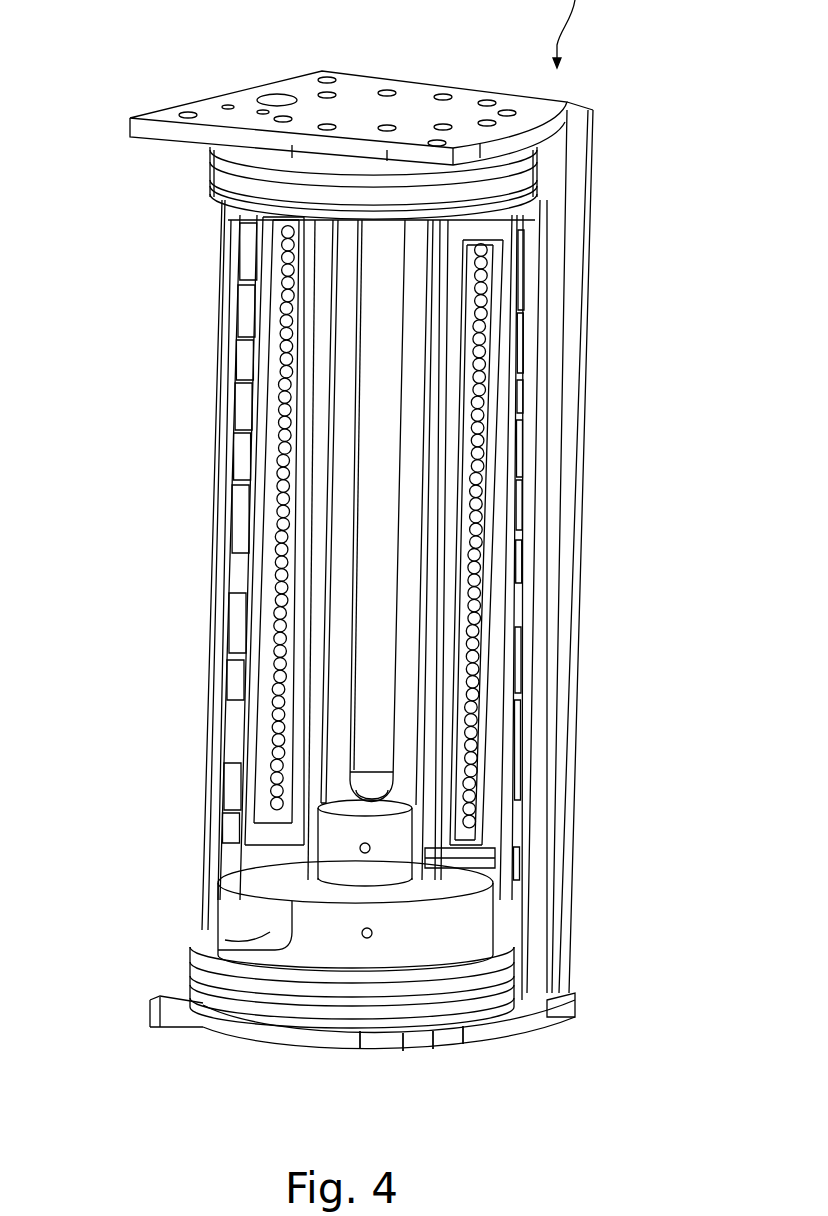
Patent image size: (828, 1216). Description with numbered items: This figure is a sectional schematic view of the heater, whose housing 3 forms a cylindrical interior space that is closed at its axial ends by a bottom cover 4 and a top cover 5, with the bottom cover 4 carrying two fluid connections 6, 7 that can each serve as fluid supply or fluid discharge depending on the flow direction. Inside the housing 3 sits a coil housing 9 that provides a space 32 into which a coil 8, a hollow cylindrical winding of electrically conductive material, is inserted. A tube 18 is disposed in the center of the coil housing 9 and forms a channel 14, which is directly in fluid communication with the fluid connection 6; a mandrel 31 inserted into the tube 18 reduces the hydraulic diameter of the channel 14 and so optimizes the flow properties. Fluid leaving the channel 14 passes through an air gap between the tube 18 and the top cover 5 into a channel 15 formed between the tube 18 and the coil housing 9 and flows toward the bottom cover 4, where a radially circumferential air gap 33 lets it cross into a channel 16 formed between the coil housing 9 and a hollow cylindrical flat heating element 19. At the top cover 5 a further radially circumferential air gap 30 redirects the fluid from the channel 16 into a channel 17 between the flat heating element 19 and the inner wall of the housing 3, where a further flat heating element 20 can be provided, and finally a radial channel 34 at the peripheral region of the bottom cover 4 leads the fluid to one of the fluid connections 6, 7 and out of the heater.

The housing 3 is at (578, 303).
The cover 4 is at (475, 1032).
The cover 5 is at (418, 105).
The fluid connection 6 is at (323, 1055).
The fluid connection 7 is at (411, 1038).
The coil 8 is at (278, 782).
The coil housing 9 is at (472, 866).
The channel 14 is at (342, 665).
The channel 15 is at (438, 600).
The channel 16 is at (262, 432).
The channel 17 is at (524, 500).
The tube 18 is at (422, 702).
The flat heating element 19 is at (520, 254).
The further flat heating element 20 is at (523, 396).
The radially circumferential air gap 30 is at (540, 214).
The mandrel 31 is at (377, 546).
The space 32 is at (480, 822).
The radially circumferential air gap 33 is at (323, 866).
The radial channel 34 is at (242, 926).